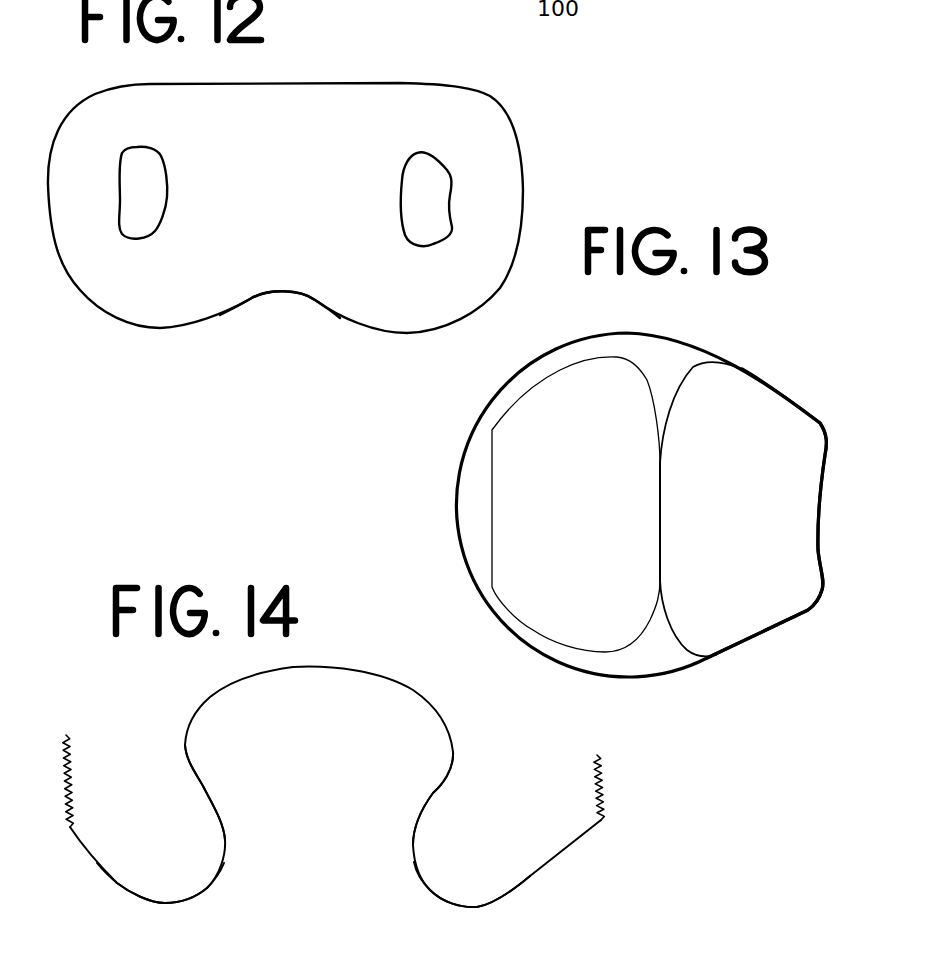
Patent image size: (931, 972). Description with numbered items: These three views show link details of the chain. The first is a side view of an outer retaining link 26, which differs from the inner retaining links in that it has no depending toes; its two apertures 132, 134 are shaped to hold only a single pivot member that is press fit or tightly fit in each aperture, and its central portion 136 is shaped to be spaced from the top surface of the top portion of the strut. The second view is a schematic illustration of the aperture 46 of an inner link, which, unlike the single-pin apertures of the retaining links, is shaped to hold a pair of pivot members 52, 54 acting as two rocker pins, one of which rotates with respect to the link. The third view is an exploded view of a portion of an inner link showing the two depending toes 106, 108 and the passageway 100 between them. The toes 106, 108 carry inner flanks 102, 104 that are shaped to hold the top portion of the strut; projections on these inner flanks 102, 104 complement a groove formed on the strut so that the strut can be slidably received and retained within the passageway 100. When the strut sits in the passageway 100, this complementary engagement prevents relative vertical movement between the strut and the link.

In FIG. 12, the outer retaining link 26 is at (382, 83).
In FIG. 12, the aperture 132 is at (136, 143).
In FIG. 12, the aperture 134 is at (429, 151).
In FIG. 12, the central portion 136 is at (280, 291).
In FIG. 13, the aperture 46 is at (680, 337).
In FIG. 13, the pivot member 52 is at (562, 388).
In FIG. 13, the pivot member 54 is at (747, 390).
In FIG. 14, the passageway 100 is at (312, 834).
In FIG. 14, the inner flank 102 is at (204, 786).
In FIG. 14, the inner flank 104 is at (433, 793).
In FIG. 14, the toe 106 is at (196, 897).
In FIG. 14, the toe 108 is at (450, 903).